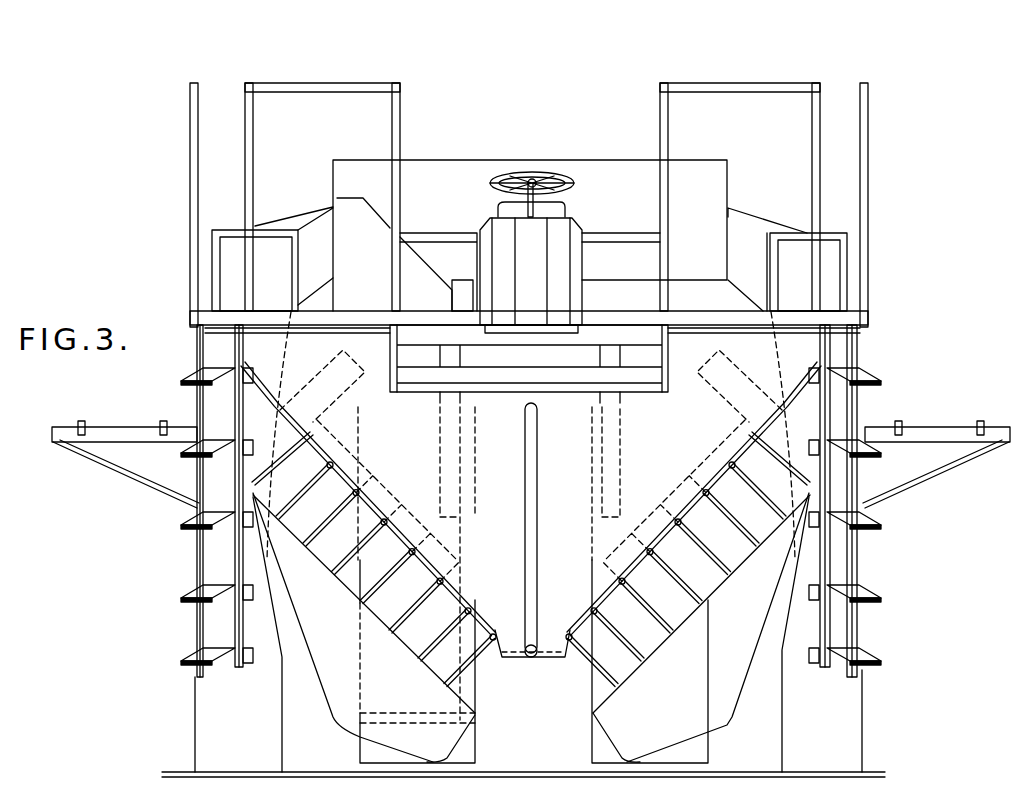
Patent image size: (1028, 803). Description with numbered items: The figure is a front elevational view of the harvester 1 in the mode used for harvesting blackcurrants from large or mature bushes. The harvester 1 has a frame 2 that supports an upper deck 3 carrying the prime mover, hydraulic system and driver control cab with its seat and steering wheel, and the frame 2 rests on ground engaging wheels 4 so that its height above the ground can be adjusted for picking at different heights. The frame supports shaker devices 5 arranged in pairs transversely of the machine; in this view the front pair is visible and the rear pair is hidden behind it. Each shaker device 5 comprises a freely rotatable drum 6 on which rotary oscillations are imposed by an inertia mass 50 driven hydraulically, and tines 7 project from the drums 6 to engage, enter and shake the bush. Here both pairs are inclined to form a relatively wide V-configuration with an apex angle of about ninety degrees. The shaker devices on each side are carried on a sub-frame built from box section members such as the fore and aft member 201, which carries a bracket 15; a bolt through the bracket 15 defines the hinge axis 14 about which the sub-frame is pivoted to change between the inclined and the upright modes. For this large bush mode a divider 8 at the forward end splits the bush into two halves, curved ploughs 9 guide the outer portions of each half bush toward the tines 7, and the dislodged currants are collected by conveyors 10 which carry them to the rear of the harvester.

The harvester 1 is at (141, 286).
The frame 2 is at (781, 353).
The upper deck 3 is at (783, 318).
The ground engaging wheels 4 is at (220, 745).
The shaker devices 5 is at (374, 512).
The drums 6 is at (253, 493).
The tines 7 is at (612, 615).
The divider 8 is at (527, 623).
The curved ploughs 9 is at (337, 675).
The conveyors 10 is at (375, 752).
The hinge axis 14 is at (470, 590).
The bracket 15 is at (614, 553).
The inertia mass 50 is at (265, 435).
The box section member 201 is at (270, 385).